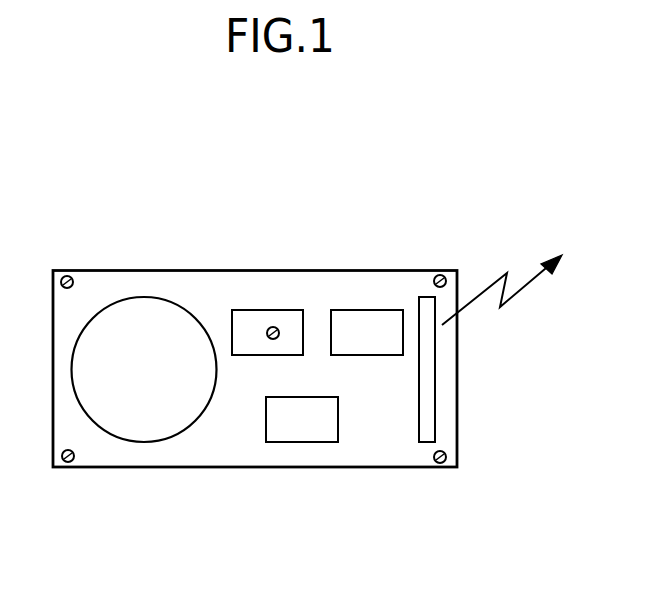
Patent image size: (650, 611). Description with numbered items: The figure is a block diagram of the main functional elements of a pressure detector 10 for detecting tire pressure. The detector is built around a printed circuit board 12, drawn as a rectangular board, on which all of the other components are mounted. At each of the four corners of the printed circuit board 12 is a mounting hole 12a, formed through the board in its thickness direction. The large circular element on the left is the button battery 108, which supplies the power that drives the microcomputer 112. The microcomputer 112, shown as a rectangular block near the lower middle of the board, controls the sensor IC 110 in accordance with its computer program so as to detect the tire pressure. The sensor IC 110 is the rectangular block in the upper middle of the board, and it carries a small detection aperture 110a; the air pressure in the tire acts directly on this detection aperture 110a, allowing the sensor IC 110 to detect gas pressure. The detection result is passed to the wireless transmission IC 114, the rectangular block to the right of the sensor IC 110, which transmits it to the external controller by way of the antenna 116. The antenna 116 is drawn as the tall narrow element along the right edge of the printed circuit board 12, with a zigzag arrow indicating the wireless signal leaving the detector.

The pressure detector 10 is at (268, 134).
The printed circuit board 12 is at (360, 455).
The mounting holes 12a is at (68, 276).
The button battery 108 is at (132, 430).
The sensor IC 110 is at (250, 332).
The detection aperture 110a is at (274, 326).
The microcomputer 112 is at (288, 430).
The wireless transmission IC 114 is at (366, 332).
The antenna 116 is at (428, 372).